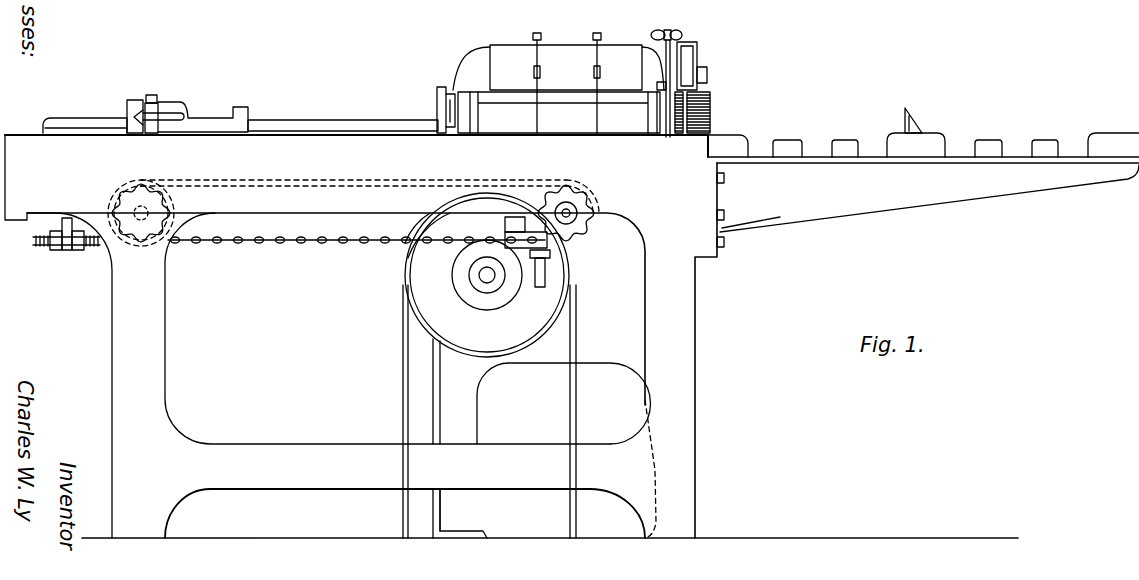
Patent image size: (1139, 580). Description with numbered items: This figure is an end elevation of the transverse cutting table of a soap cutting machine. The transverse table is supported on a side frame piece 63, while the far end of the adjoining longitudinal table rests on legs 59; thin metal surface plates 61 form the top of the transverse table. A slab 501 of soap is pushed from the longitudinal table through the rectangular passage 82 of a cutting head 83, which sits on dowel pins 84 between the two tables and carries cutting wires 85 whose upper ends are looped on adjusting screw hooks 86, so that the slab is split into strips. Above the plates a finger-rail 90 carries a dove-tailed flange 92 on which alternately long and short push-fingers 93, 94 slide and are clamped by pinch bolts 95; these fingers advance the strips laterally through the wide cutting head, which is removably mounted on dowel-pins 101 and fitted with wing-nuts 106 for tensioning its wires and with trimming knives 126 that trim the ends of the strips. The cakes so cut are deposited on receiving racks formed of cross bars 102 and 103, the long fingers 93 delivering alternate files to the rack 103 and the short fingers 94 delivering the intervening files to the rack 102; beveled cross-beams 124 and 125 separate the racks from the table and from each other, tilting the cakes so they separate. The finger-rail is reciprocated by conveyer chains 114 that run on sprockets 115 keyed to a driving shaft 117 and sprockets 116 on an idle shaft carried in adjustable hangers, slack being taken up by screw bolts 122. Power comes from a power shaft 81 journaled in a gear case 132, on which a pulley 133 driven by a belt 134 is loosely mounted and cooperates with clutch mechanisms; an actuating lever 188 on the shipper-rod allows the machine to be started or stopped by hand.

The legs 59 is at (460, 507).
The surface plates of transverse cutting table 61 is at (308, 128).
The side frame piece 63 is at (160, 388).
The power shaft 81 is at (487, 282).
The rectangular passage 82 is at (565, 100).
The cutting head 83 is at (482, 78).
The dowel pins 84 is at (437, 110).
The cutting wires 85 is at (535, 118).
The adjusting screw hooks 86 is at (536, 58).
The finger-rail 90 is at (121, 100).
The dove-tailed flange 92 is at (135, 118).
The long push-fingers 93 is at (360, 121).
The short push-fingers 94 is at (238, 118).
The pinch bolts 95 is at (152, 96).
The dowel-pins 101 is at (690, 60).
The cross bars of receiving rack 102 is at (845, 145).
The cross bars of receiving rack 103 is at (1046, 145).
The wing-nuts 106 is at (678, 33).
The conveyer chains 114 is at (353, 226).
The sprockets 115 is at (586, 204).
The sprockets 116 is at (168, 207).
The driving shaft 117 is at (569, 218).
The screw bolts 122 is at (103, 246).
The cross-beam 124 is at (732, 139).
The cross-beam 125 is at (940, 140).
The trimming knives 126 is at (706, 105).
The gear case 132 is at (443, 262).
The pulley 133 is at (518, 352).
The belt 134 is at (403, 400).
The actuating lever 188 is at (515, 216).
The slabs 501 is at (565, 128).